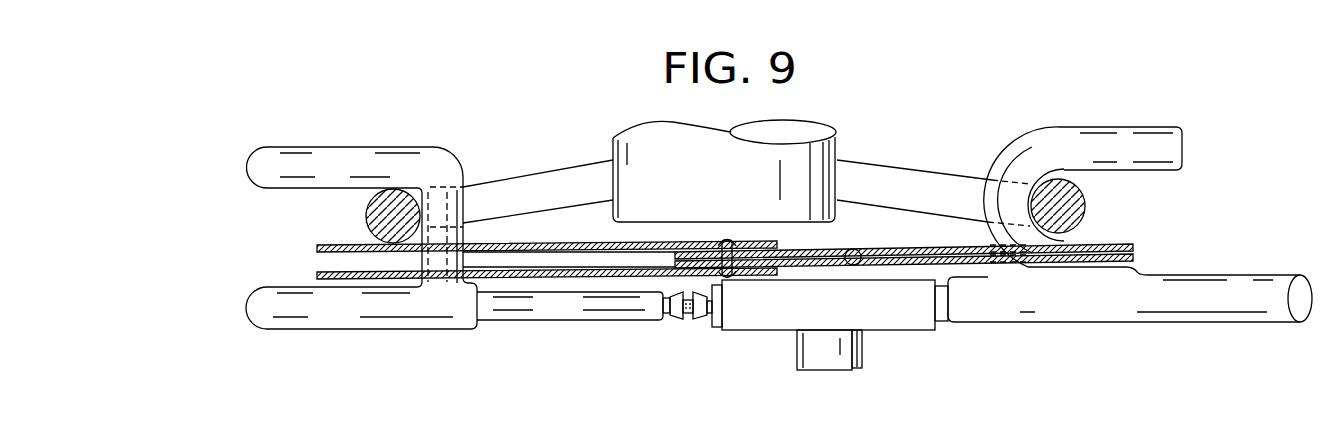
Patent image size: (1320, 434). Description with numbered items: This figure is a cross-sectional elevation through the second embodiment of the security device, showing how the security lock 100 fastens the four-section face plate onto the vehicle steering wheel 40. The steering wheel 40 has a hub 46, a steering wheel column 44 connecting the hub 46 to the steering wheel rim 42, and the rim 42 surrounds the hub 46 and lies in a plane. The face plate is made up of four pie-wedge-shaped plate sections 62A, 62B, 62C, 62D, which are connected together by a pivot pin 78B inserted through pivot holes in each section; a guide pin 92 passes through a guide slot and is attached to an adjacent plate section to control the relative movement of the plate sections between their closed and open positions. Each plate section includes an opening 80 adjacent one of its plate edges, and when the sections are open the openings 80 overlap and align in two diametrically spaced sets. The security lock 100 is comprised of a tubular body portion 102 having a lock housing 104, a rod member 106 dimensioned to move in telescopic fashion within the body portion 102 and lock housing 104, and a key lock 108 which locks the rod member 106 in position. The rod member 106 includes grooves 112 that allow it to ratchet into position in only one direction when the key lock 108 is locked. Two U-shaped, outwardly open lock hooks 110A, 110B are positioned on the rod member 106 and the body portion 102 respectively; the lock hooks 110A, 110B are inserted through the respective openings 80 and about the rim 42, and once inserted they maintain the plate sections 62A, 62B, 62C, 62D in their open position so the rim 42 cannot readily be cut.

The lock hook 110A is at (277, 163).
The lock hook 110B is at (1147, 137).
The steering wheel rim 42 is at (400, 187).
The steering wheel 40 is at (1081, 179).
The steering wheel column 44 is at (555, 180).
The hub 46 is at (645, 145).
The opening 80 is at (502, 273).
The plate section 62A is at (337, 280).
The plate section 62B is at (1108, 270).
The plate section 62C is at (1123, 240).
The plate section 62D is at (337, 243).
The pivot pin 78B is at (729, 237).
The guide pin 92 is at (858, 235).
The security lock 100 is at (845, 354).
The tubular body portion 102 is at (1270, 307).
The lock housing 104 is at (873, 318).
The rod member 106 is at (553, 307).
The key lock 108 is at (828, 362).
The grooves 112 is at (686, 316).